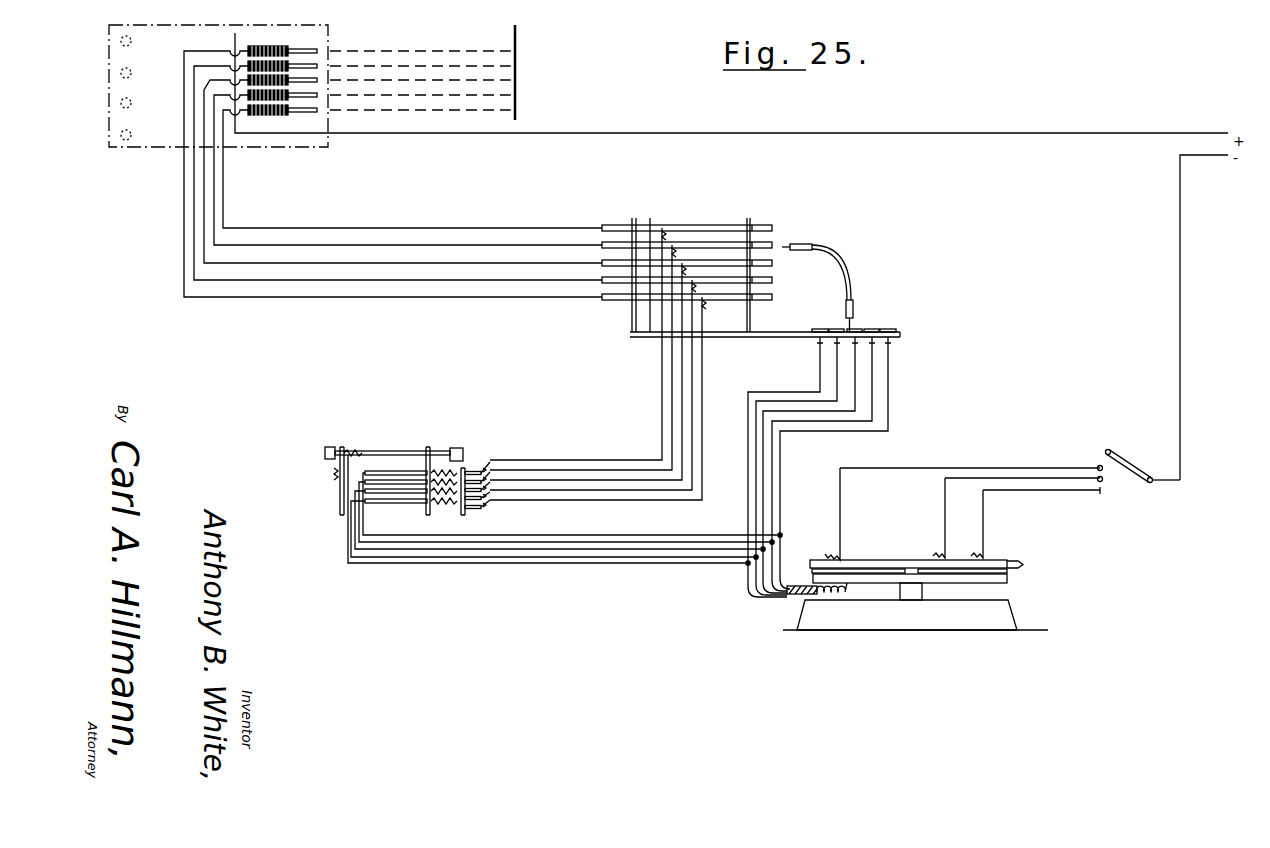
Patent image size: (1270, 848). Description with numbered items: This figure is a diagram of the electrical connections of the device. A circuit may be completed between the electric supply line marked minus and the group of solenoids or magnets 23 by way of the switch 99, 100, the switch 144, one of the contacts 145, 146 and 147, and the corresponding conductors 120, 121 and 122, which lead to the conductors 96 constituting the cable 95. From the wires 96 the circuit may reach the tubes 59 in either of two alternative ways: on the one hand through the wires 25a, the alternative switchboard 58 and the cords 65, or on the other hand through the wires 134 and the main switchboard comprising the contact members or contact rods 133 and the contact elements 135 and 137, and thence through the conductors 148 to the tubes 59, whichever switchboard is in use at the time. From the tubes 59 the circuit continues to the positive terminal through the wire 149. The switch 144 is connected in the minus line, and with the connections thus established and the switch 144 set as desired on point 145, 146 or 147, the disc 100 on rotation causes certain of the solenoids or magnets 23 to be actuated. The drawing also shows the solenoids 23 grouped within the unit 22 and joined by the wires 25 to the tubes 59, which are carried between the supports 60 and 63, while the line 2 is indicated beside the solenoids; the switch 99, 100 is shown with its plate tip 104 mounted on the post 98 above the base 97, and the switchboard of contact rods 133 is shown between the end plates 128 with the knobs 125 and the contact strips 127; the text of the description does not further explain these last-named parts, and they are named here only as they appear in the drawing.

The machine frame line 2 is at (518, 46).
The selector unit 22 is at (131, 46).
The solenoids or magnets 23 is at (272, 116).
The conductors 25 is at (413, 262).
The wires 25a is at (857, 369).
The switchboard 58 is at (903, 338).
The tubes 59 is at (700, 248).
The insulating support 60 is at (633, 222).
The insulating support 63 is at (750, 227).
The cords 65 is at (856, 272).
The cable 95 is at (795, 598).
The conductors 96 is at (840, 596).
The base 97 is at (820, 622).
The support post 98 is at (918, 593).
The switch 99 is at (1008, 579).
The disc 100 is at (882, 560).
The plate tip 104 is at (1024, 565).
The conductor 120 is at (986, 517).
The conductor 121 is at (945, 505).
The conductor 122 is at (935, 467).
The knobs 125 is at (326, 447).
The contact strips 127 is at (486, 511).
The end plates 128 is at (342, 446).
The contact members 133 is at (375, 498).
The wires 134 is at (621, 560).
The contact elements 135 is at (452, 518).
The contact elements 137 is at (457, 517).
The switch 144 is at (1150, 459).
The contact 145 is at (1100, 496).
The contact 146 is at (1096, 465).
The contact 147 is at (1098, 465).
The conductors 148 is at (603, 478).
The wire 149 is at (945, 139).